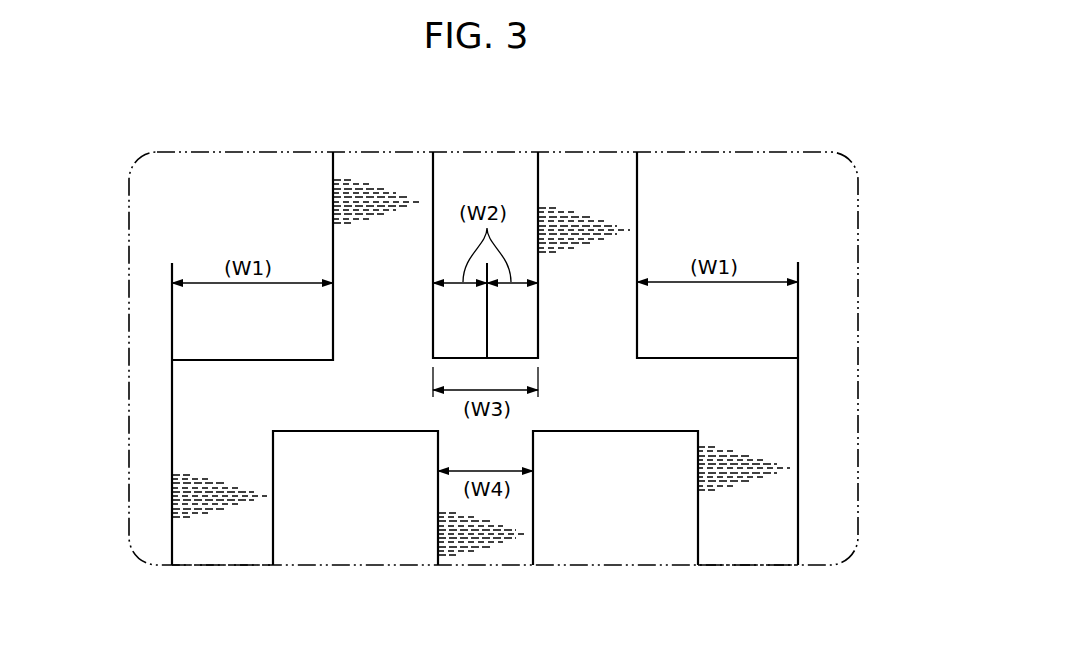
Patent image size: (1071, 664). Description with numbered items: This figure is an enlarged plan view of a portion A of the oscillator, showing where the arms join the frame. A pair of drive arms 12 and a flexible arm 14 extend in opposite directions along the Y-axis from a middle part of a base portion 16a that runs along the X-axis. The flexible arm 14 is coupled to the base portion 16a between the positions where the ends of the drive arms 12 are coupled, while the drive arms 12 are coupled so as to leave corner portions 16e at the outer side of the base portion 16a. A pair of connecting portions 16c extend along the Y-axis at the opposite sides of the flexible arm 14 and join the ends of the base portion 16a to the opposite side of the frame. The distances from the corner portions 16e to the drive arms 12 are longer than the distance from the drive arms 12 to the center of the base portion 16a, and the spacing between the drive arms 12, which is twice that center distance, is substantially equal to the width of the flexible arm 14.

The portion A is at (784, 152).
The drive arms 12 is at (538, 193).
The flexible arm 14 is at (487, 548).
The base portion 16a is at (669, 395).
The connecting portions 16c is at (210, 548).
The corner portions 16e is at (172, 360).